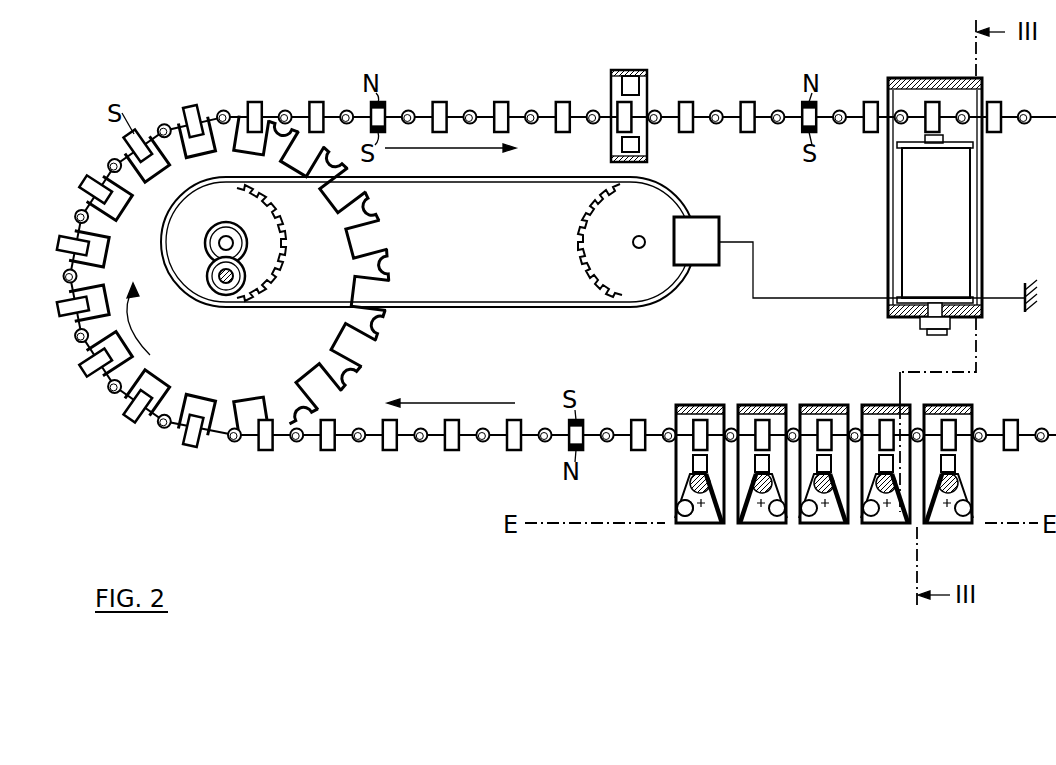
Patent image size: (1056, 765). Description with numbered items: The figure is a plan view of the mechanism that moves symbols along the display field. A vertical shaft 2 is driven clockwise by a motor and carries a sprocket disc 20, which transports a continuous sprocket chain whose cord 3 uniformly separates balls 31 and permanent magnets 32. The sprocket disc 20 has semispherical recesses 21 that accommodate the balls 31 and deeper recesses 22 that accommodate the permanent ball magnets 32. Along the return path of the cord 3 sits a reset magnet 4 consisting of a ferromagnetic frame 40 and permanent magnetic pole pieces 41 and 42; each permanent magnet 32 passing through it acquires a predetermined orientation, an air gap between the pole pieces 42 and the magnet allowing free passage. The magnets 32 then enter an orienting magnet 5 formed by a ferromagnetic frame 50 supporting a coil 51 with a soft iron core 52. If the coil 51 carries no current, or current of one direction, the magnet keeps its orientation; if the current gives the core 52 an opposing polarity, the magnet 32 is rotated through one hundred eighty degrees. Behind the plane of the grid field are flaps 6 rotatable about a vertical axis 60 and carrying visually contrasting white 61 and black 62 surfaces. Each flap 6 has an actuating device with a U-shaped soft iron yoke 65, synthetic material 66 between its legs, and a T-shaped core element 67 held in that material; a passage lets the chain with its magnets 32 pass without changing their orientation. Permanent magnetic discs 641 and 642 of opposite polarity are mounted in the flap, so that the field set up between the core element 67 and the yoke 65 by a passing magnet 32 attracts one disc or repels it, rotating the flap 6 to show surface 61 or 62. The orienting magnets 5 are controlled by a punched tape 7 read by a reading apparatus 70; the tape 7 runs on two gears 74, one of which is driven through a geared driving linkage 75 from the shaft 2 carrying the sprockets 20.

The vertical shaft 2 is at (225, 292).
The cord 3 is at (440, 102).
The reset magnet 4 is at (647, 86).
The orienting magnet 5 is at (982, 229).
The flap 6 is at (712, 516).
The punched tape 7 is at (487, 183).
The sprocket disc 20 is at (246, 276).
The semispherical recess 21 is at (340, 381).
The deeper recess 22 is at (372, 247).
The ball 31 is at (472, 110).
The permanent magnet 32 is at (318, 103).
The ferromagnetic frame 40 is at (635, 100).
The permanent magnetic pole piece 41 is at (621, 83).
The permanent magnetic pole piece 42 is at (640, 145).
The ferromagnetic frame 50 is at (948, 189).
The coil 51 is at (942, 247).
The soft iron core 52 is at (934, 146).
The rotatable axis 60 is at (887, 505).
The white surface 61 is at (698, 523).
The black surface 62 is at (752, 523).
The U-shaped soft iron yoke 65 is at (693, 405).
The synthetic material 66 is at (678, 418).
The T-shaped core element 67 is at (690, 466).
The reading apparatus 70 is at (719, 222).
The gear 74 is at (286, 249).
The geared driving linkage 75 is at (213, 270).
The permanent magnetic disc 641 is at (779, 512).
The permanent magnetic disc 642 is at (680, 514).